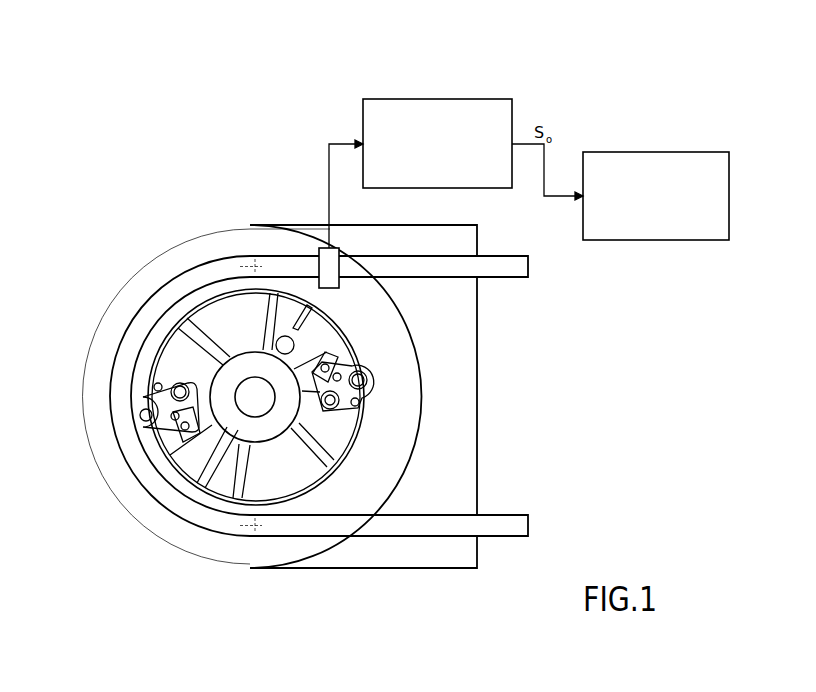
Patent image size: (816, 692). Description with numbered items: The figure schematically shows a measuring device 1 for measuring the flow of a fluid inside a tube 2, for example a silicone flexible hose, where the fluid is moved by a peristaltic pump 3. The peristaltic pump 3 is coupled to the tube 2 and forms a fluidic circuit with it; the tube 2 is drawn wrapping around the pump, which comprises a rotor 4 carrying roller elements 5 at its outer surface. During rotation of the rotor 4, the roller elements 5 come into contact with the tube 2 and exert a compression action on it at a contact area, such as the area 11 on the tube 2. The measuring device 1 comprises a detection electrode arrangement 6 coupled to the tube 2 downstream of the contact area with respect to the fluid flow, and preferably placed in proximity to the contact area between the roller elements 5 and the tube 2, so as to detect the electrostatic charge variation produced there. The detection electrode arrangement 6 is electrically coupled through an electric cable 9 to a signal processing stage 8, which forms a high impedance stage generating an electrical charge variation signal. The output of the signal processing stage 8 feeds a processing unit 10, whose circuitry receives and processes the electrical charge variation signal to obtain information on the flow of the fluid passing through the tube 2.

The measuring device 1 is at (579, 78).
The tube 2 is at (178, 282).
The peristaltic pump 3 is at (392, 385).
The rotor 4 is at (223, 423).
The roller elements 5 is at (123, 413).
The detection electrode arrangement 6 is at (316, 248).
The signal processing stage 8 is at (487, 108).
The electric cable 9 is at (326, 172).
The processing unit 10 is at (677, 163).
The contact area 11 is at (120, 407).